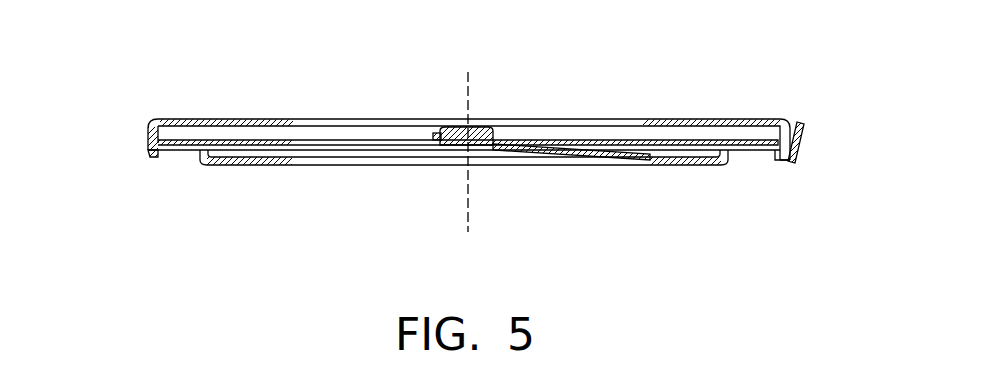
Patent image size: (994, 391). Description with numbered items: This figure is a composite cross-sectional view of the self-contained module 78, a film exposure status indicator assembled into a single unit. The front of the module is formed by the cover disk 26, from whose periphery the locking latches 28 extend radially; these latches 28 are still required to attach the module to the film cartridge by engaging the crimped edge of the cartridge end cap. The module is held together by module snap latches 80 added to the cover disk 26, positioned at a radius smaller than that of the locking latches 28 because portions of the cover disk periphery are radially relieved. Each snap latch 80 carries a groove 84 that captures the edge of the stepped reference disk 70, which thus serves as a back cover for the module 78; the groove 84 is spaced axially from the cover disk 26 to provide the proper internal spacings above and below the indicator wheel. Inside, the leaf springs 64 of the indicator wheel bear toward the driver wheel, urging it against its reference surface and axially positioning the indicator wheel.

The cover disk 26 is at (712, 120).
The peripheral latches 28 is at (800, 132).
The leaf springs 64 is at (245, 166).
The stepped reference disk 70 is at (168, 161).
The self-contained module 78 is at (519, 96).
The module snap latches 80 is at (155, 158).
The groove 84 is at (148, 145).